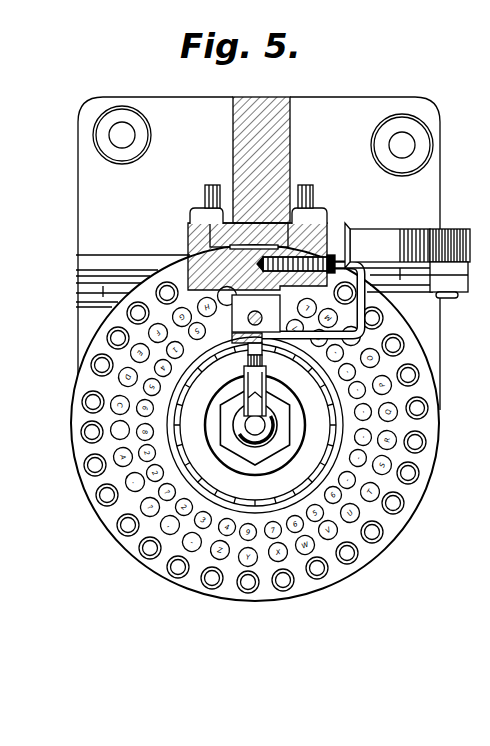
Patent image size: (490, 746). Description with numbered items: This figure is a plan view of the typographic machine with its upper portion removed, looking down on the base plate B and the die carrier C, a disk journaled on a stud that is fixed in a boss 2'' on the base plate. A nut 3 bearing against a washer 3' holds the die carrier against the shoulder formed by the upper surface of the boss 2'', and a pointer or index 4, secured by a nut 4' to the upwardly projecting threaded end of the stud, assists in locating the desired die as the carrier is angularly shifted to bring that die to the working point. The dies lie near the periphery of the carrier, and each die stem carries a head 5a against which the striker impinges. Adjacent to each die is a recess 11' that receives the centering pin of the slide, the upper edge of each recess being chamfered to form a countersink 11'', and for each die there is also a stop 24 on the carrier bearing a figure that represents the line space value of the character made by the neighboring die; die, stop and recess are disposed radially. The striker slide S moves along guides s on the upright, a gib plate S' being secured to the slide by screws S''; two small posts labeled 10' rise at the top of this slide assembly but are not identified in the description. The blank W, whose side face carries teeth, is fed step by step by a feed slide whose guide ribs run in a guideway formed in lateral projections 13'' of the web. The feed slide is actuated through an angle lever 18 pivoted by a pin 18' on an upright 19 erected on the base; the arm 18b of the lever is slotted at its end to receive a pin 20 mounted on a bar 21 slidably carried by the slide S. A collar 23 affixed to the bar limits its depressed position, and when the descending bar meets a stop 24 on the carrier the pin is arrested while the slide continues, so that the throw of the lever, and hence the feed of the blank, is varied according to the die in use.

The base plate B is at (233, 152).
The screws 10' is at (252, 185).
The slide S is at (190, 215).
The guides s is at (189, 230).
The gib plate S' is at (322, 210).
The screws S'' is at (364, 245).
The lateral projections 13'' is at (111, 264).
The blank W is at (117, 291).
The head 5a is at (110, 427).
The collar 23 is at (251, 296).
The pin 20 is at (244, 356).
The bar 21 is at (270, 347).
The arm of the angle lever 18b is at (317, 343).
The pointer or index 4 is at (241, 425).
The boss 2'' is at (286, 419).
The nut 4' is at (280, 434).
The nut 3 is at (251, 425).
The washer 3' is at (266, 443).
The stops 24 is at (228, 503).
The countersink 11'' is at (190, 588).
The recess 11' is at (295, 591).
The die carrier C is at (338, 576).
The upright 19 is at (406, 233).
The pin 18' is at (454, 230).
The angle lever 18 is at (458, 284).